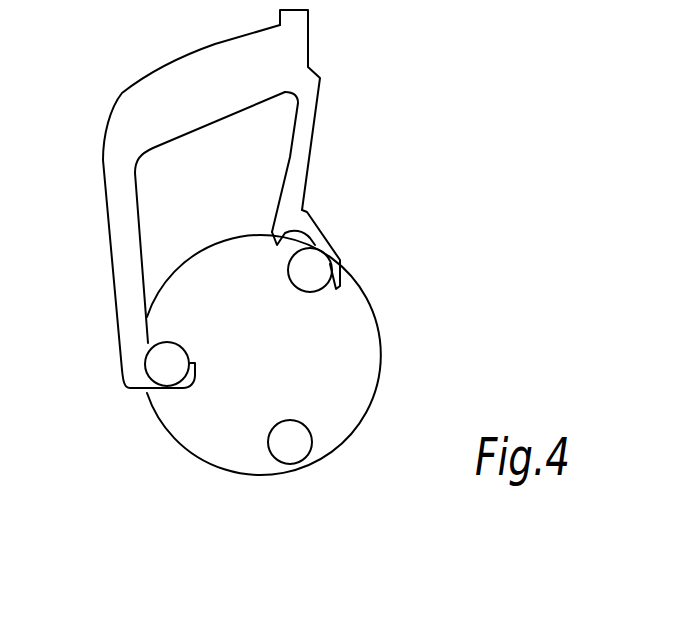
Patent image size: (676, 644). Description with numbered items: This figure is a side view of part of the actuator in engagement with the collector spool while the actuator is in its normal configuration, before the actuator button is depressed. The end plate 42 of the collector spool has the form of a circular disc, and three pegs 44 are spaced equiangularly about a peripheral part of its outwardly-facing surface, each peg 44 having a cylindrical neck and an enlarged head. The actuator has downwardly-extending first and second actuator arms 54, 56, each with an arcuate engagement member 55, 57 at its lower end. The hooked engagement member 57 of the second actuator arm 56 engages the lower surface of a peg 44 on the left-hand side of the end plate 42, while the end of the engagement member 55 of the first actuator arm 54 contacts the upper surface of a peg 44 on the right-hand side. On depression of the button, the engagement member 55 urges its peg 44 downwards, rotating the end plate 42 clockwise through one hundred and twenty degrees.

The end plate 42 is at (362, 345).
The pegs 44 is at (303, 277).
The first actuator arm 54 is at (307, 142).
The engagement member 55 is at (318, 237).
The second actuator arm 56 is at (117, 230).
The engagement member 57 is at (140, 380).